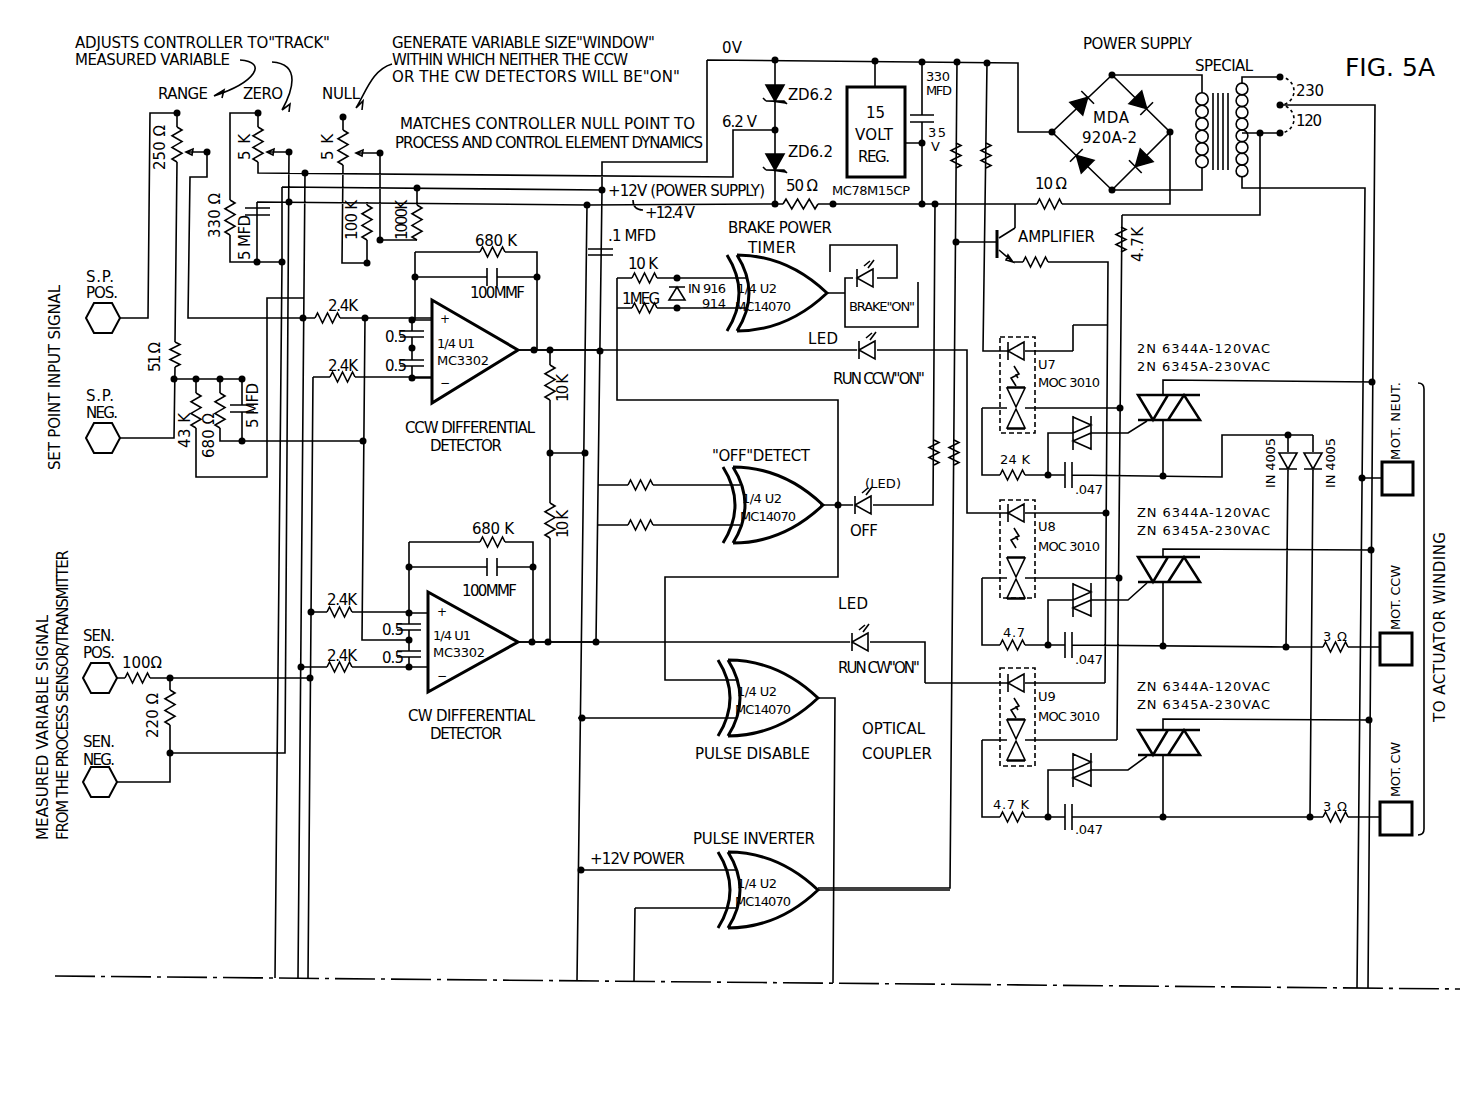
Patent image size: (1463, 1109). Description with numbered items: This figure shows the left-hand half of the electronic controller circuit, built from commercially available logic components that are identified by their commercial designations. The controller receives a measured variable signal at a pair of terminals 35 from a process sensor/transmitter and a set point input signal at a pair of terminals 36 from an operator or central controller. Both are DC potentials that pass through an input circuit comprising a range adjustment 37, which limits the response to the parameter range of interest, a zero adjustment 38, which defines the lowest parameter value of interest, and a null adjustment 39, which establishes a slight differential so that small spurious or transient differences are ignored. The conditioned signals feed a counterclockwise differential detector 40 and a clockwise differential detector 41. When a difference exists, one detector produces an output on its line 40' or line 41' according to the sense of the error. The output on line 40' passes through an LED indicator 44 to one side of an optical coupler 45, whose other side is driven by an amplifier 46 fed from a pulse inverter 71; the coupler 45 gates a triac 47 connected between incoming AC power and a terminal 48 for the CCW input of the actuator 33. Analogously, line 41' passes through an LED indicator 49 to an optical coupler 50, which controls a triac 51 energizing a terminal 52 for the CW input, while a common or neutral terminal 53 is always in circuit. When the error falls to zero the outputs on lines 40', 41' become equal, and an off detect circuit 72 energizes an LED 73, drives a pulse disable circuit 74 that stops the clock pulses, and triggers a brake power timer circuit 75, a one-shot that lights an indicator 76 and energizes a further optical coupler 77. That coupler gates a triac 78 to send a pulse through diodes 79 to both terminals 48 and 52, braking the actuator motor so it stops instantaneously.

The actuator 33 is at (1422, 533).
The pair of terminals 35 is at (130, 772).
The pair of terminals 36 is at (120, 428).
The range adjustment 37 is at (190, 130).
The zero adjustment 38 is at (270, 131).
The null adjustment 39 is at (355, 133).
The counterclockwise differential detector 40 is at (475, 351).
The line 40' is at (559, 339).
The clockwise differential detector 41 is at (473, 642).
The line 41' is at (557, 663).
The LED indicator 44 is at (878, 346).
The optical coupler 45 is at (1000, 545).
The amplifier 46 is at (994, 257).
The triac 47 is at (1207, 584).
The terminal 48 is at (1398, 665).
The LED indicator 49 is at (883, 640).
The optical coupler 50 is at (967, 704).
The triac 51 is at (1173, 832).
The terminal 52 is at (1400, 835).
The common or neutral terminal 53 is at (1410, 478).
The pulse inverter 71 is at (778, 917).
The "off" detect circuit 72 is at (793, 534).
The LED 73 is at (850, 502).
The pulse disable circuit 74 is at (724, 694).
The brake power timer circuit 75 is at (732, 262).
The indicator 76 is at (854, 260).
The optical coupler 77 is at (1000, 375).
The triac 78 is at (1177, 445).
The diodes 79 is at (1310, 492).